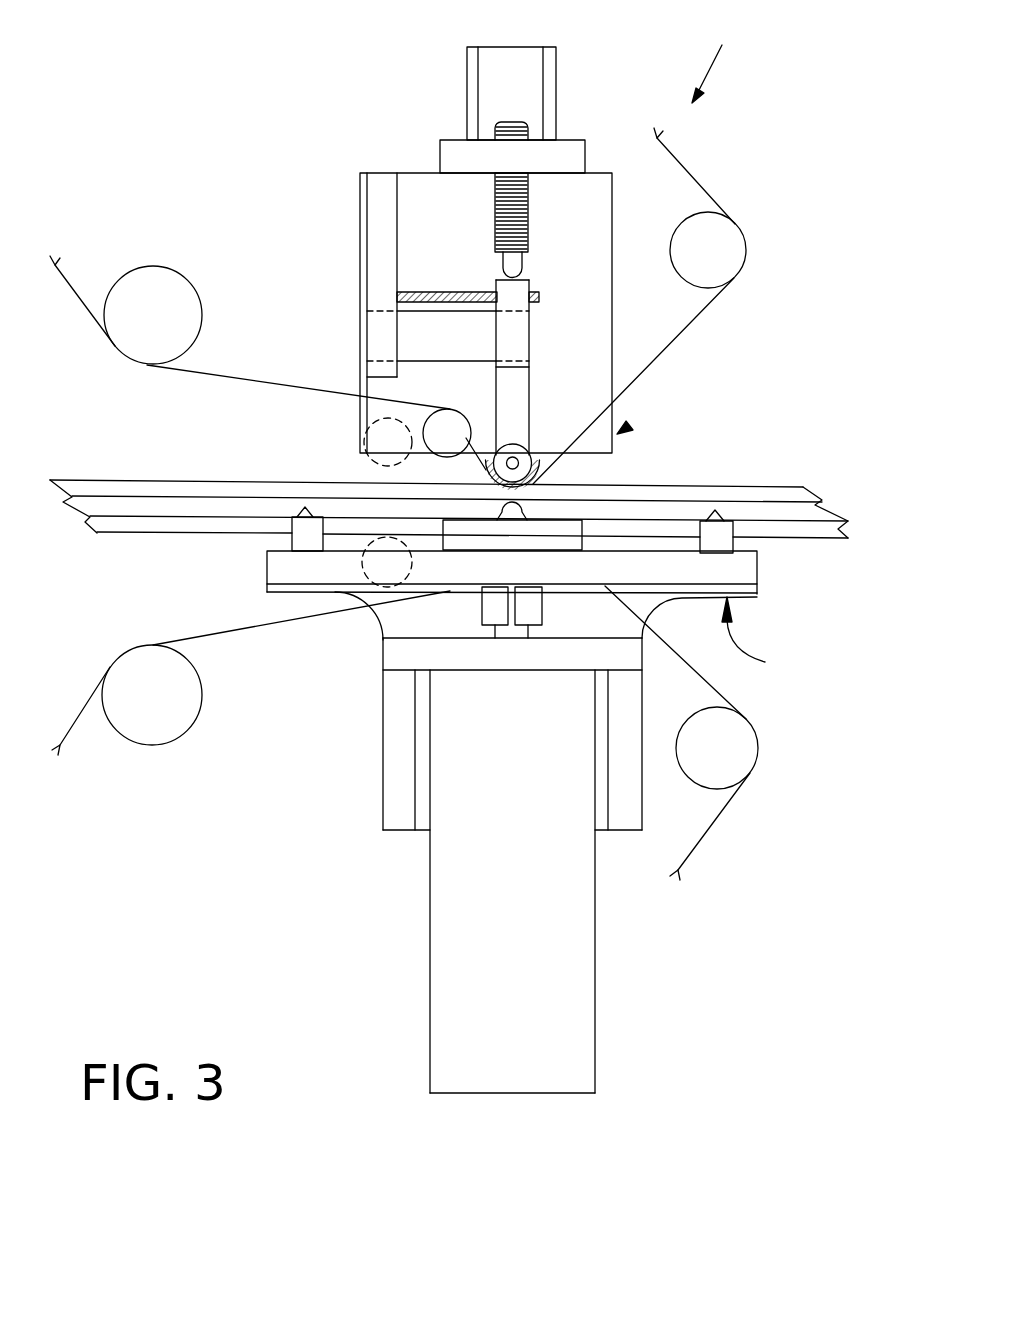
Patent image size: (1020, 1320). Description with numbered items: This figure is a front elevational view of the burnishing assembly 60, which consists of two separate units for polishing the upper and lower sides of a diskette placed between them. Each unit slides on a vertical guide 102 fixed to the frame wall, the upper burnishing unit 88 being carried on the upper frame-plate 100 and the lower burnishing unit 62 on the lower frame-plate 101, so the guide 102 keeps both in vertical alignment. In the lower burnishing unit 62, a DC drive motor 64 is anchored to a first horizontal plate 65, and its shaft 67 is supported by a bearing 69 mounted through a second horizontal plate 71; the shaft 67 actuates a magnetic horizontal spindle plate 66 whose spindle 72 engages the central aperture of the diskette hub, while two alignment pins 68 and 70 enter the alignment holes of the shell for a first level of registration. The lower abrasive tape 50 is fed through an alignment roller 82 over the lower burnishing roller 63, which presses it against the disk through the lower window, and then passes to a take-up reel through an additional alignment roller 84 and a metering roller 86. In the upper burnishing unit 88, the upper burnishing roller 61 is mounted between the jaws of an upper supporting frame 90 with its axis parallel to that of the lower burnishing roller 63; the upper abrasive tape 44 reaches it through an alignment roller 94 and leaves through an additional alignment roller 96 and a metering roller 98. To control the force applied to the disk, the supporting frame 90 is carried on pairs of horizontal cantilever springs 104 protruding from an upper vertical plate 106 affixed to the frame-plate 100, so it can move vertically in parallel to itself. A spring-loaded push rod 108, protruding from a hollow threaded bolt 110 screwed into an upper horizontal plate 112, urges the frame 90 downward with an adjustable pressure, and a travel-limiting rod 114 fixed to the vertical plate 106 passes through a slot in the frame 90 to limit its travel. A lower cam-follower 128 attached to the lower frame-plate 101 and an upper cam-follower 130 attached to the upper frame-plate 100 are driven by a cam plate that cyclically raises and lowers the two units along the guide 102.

The abrasive tape 44 is at (690, 323).
The abrasive tape 50 is at (710, 823).
The burnishing assembly 60 is at (718, 58).
The upper burnishing roller 61 is at (530, 452).
The lower burnishing unit 62 is at (761, 638).
The lower burnishing roller 63 is at (546, 507).
The DC drive motor 64 is at (456, 881).
The first horizontal plate 65 is at (386, 651).
The magnetic horizontal spindle plate 66 is at (537, 543).
The shaft 67 is at (526, 628).
The alignment pin 68 is at (305, 508).
The bearing 69 is at (530, 603).
The alignment pin 70 is at (716, 510).
The second horizontal plate 71 is at (745, 574).
The spindle 72 is at (522, 504).
The alignment roller 82 is at (743, 748).
The alignment roller 84 is at (443, 590).
The metering roller 86 is at (170, 713).
The upper burnishing unit 88 is at (628, 427).
The upper supporting frame 90 is at (517, 406).
The alignment roller 94 is at (746, 272).
The alignment roller 96 is at (445, 426).
The metering roller 98 is at (160, 284).
The upper frame-plate 100 is at (600, 229).
The lower frame-plate 101 is at (648, 606).
The vertical guide 102 is at (532, 76).
The horizontal cantilever springs 104 is at (367, 312).
The upper vertical plate 106 is at (367, 206).
The spring-loaded push rod 108 is at (518, 269).
The hollow threaded bolt 110 is at (521, 223).
The upper horizontal plate 112 is at (456, 149).
The travel-limiting rod 114 is at (420, 297).
The lower cam-follower 128 is at (378, 565).
The upper cam-follower 130 is at (388, 442).